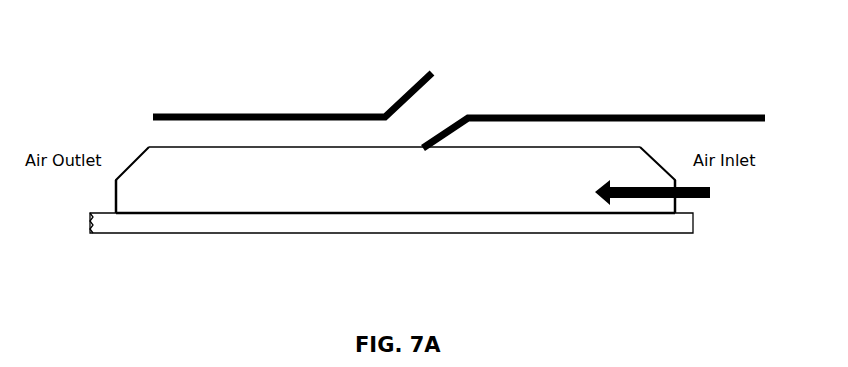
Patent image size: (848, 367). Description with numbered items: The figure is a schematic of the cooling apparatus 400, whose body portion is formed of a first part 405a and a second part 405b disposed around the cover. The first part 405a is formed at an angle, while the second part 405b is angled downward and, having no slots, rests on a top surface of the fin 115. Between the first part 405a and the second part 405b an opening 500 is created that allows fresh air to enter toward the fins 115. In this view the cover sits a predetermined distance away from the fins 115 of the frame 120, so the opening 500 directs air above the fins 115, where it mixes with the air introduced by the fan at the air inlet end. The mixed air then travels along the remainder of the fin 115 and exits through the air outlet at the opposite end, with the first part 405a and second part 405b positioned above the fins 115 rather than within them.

The fin 115 is at (133, 182).
The frame 120 is at (242, 218).
The cooling apparatus 400 is at (459, 197).
The first part 405a is at (367, 115).
The second part 405b is at (512, 115).
The opening 500 is at (443, 103).